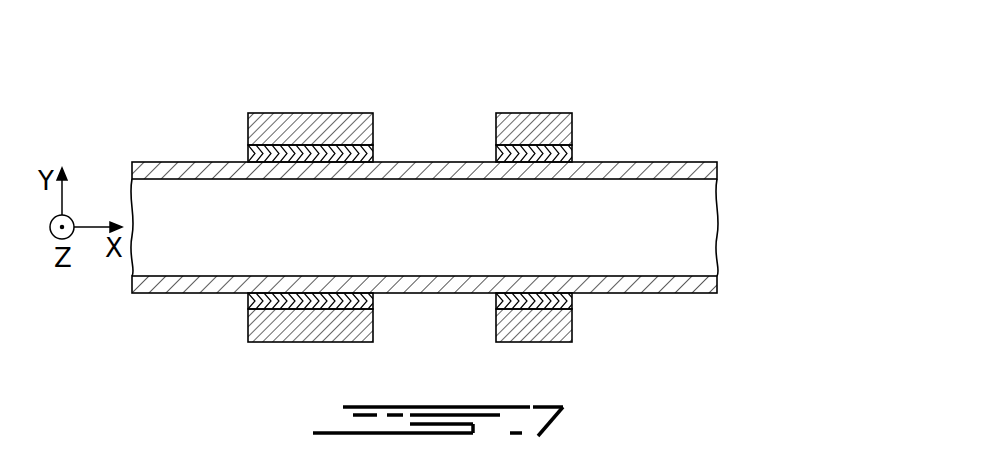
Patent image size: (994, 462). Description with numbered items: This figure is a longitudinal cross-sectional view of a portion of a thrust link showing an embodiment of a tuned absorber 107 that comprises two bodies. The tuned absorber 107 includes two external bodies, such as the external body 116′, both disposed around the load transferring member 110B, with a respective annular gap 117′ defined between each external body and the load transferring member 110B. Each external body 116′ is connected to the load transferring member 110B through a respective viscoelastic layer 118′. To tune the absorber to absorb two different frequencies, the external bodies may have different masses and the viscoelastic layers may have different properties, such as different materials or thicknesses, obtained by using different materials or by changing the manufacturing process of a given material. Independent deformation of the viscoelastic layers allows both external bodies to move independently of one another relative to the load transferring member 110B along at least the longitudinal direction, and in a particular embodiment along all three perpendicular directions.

The tuned absorber 107 is at (425, 106).
The substrate / circuit board 110B is at (700, 162).
The external body 116′ is at (303, 113).
The annular gap 117′ is at (241, 153).
The viscoelastic layer 118′ is at (252, 297).